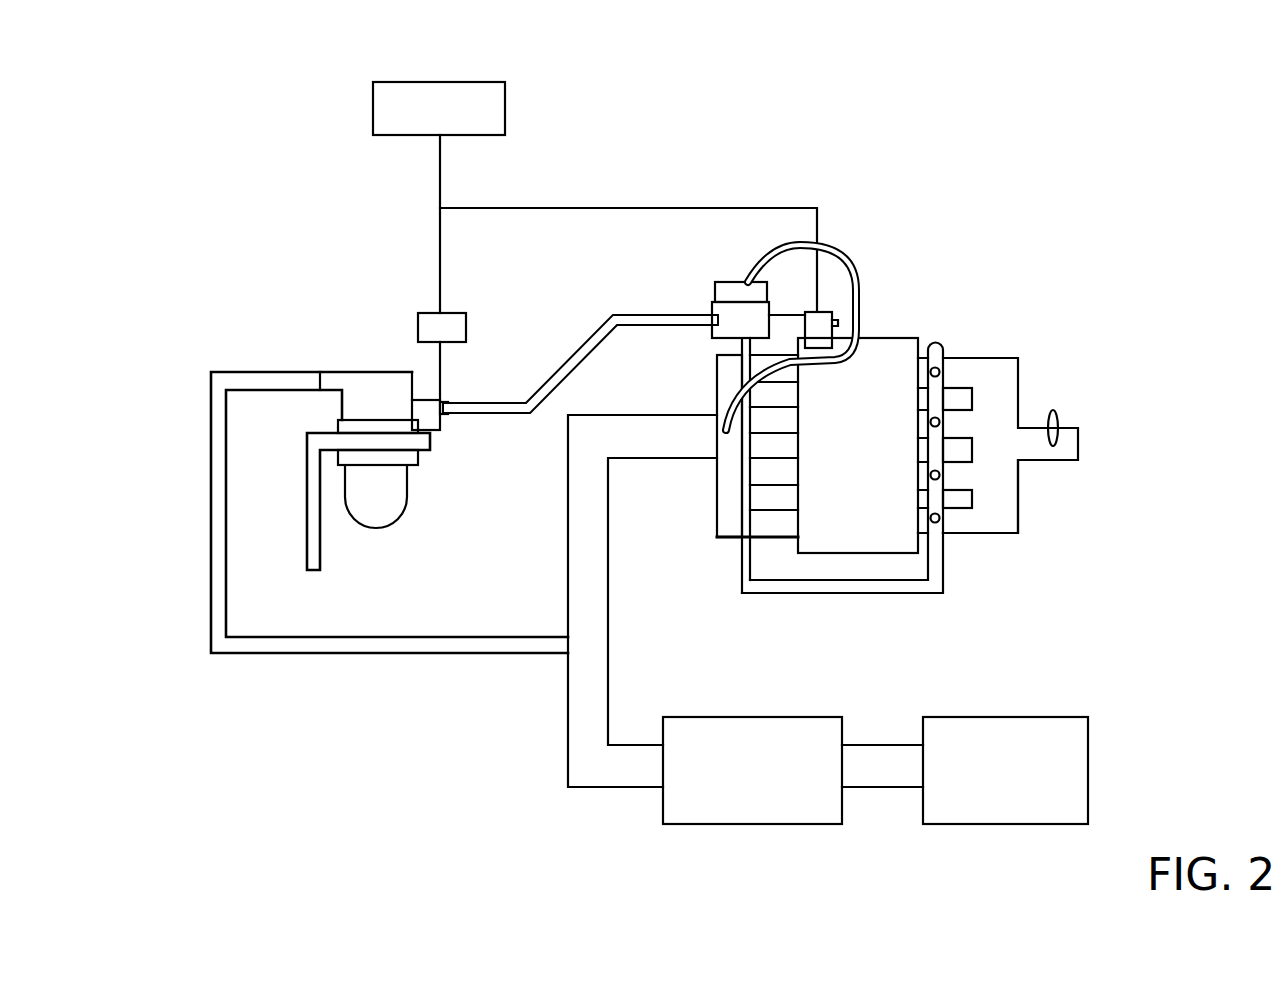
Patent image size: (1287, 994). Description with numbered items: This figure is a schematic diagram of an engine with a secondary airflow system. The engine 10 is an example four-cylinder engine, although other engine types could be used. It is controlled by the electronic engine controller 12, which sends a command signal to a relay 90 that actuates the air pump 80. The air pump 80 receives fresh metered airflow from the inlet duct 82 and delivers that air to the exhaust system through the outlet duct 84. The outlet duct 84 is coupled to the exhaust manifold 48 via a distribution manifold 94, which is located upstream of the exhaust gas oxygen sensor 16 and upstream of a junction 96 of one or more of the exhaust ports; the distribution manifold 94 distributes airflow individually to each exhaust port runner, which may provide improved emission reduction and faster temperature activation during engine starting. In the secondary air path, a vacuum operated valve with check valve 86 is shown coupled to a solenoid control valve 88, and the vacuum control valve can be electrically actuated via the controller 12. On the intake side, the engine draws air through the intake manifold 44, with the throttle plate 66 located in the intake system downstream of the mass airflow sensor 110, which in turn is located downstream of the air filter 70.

The internal combustion engine 10 is at (913, 322).
The electronic engine controller 12 is at (448, 80).
The exhaust gas oxygen sensor 16 is at (1060, 417).
The intake manifold 44 is at (717, 533).
The exhaust manifold 48 is at (1020, 372).
The throttle plate 66 is at (692, 458).
The air filter 70 is at (998, 824).
The air pump 80 is at (420, 465).
The inlet duct 82 is at (247, 370).
The outlet duct 84 is at (598, 325).
The vacuum operated valve with check valve 86 is at (737, 282).
The solenoid control valve 88 is at (838, 320).
The relay 90 is at (455, 313).
The distribution manifold 94 is at (945, 572).
The junction 96 is at (1020, 480).
The mass airflow sensor 110 is at (735, 824).